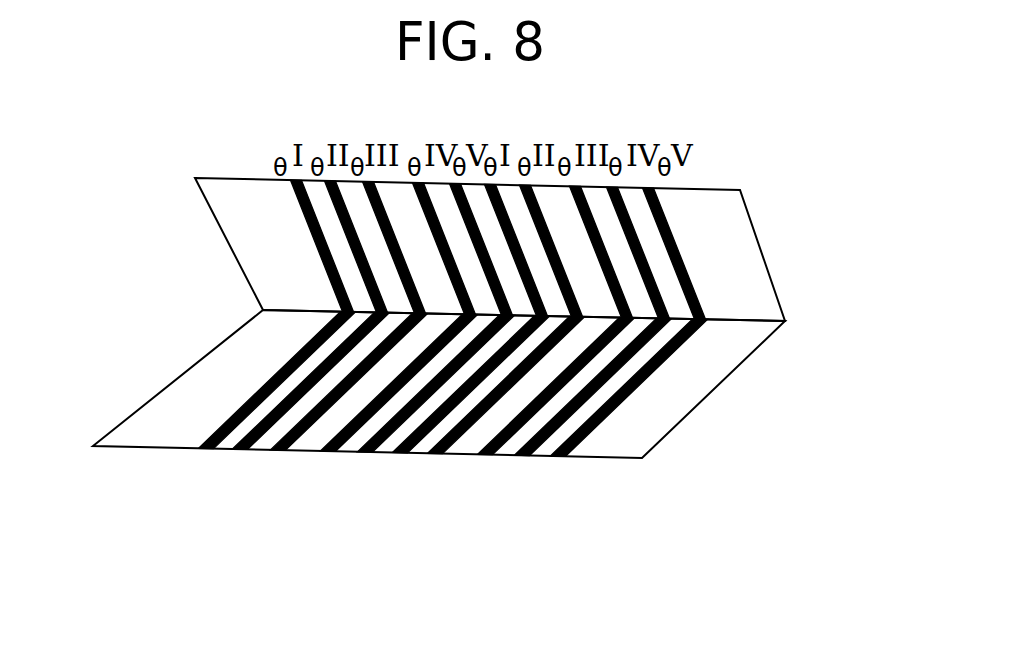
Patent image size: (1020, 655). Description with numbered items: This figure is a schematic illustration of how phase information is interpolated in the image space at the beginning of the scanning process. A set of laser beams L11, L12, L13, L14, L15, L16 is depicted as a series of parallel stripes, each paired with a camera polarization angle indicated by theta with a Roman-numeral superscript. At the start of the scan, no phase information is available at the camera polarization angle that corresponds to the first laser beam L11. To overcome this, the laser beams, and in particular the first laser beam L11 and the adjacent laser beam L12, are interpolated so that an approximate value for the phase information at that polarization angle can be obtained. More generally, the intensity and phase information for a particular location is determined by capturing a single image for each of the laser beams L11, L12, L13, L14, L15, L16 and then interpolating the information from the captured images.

The first laser beam L11 is at (210, 447).
The laser beam L12 is at (247, 447).
The laser beam L13 is at (285, 443).
The laser beam L14 is at (337, 443).
The laser beam L15 is at (378, 443).
The laser beam L16 is at (413, 443).